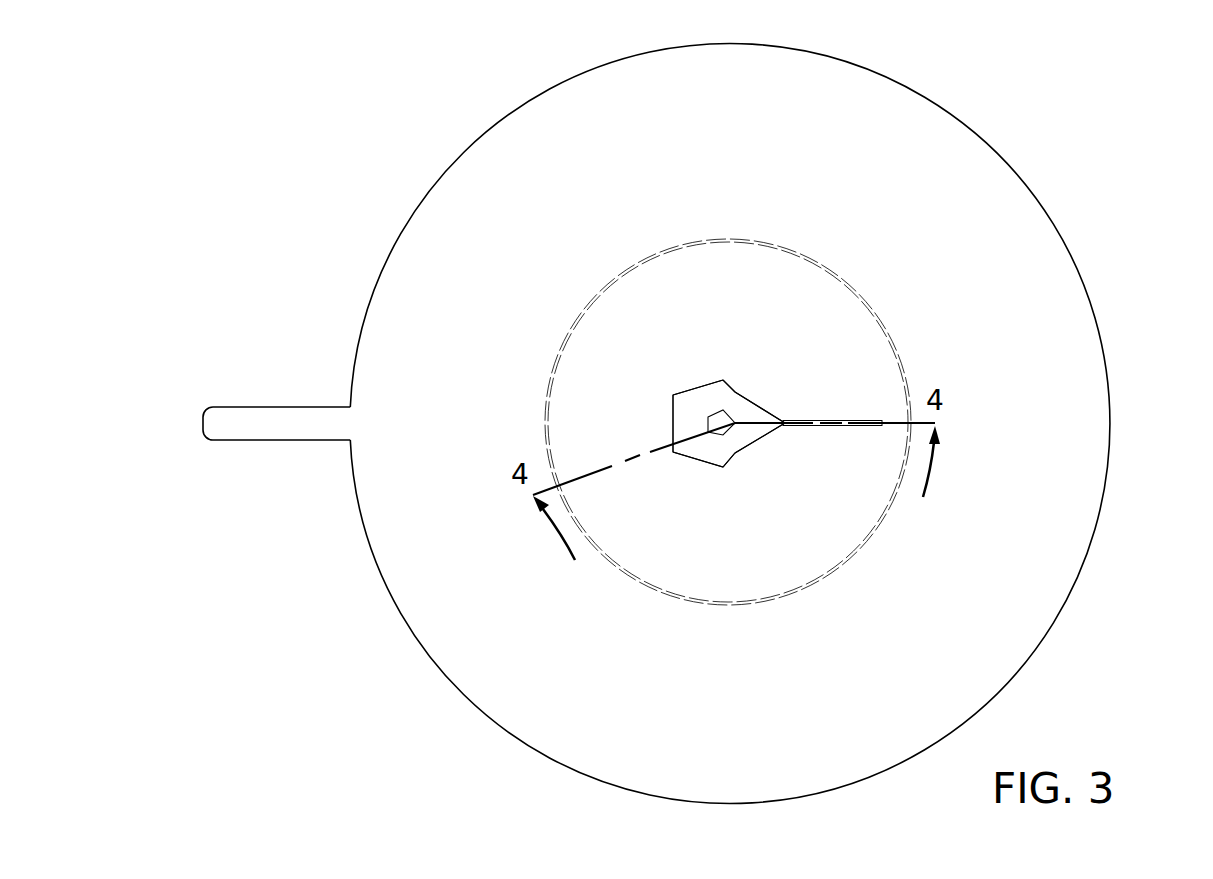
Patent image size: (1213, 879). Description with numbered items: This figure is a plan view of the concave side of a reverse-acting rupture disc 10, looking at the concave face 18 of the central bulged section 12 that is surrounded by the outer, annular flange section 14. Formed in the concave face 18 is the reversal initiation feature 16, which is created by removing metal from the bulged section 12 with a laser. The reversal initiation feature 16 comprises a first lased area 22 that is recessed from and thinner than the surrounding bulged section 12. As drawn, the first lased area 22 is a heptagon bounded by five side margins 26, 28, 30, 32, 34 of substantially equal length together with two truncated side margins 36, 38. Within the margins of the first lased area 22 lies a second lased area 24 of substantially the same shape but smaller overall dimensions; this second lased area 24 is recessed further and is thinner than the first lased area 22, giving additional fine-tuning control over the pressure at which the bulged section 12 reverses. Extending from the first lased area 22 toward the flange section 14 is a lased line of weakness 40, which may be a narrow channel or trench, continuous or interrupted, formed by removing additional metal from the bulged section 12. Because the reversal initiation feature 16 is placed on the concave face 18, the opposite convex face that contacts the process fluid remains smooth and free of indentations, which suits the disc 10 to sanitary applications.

The reverse-acting rupture disc 10 is at (990, 125).
The bulged section 12 is at (842, 340).
The flange section 14 is at (1068, 517).
The reversal initiation feature 16 is at (712, 464).
The concave face 18 is at (763, 531).
The first lased area 22 is at (685, 418).
The second lased area 24 is at (710, 418).
The side margin 26 is at (693, 392).
The side margin 28 is at (672, 430).
The side margin 30 is at (693, 455).
The side margin 32 is at (765, 412).
The side margin 34 is at (766, 440).
The truncated side margin 36 is at (733, 387).
The truncated side margin 38 is at (724, 467).
The lased line of weakness 40 is at (848, 421).